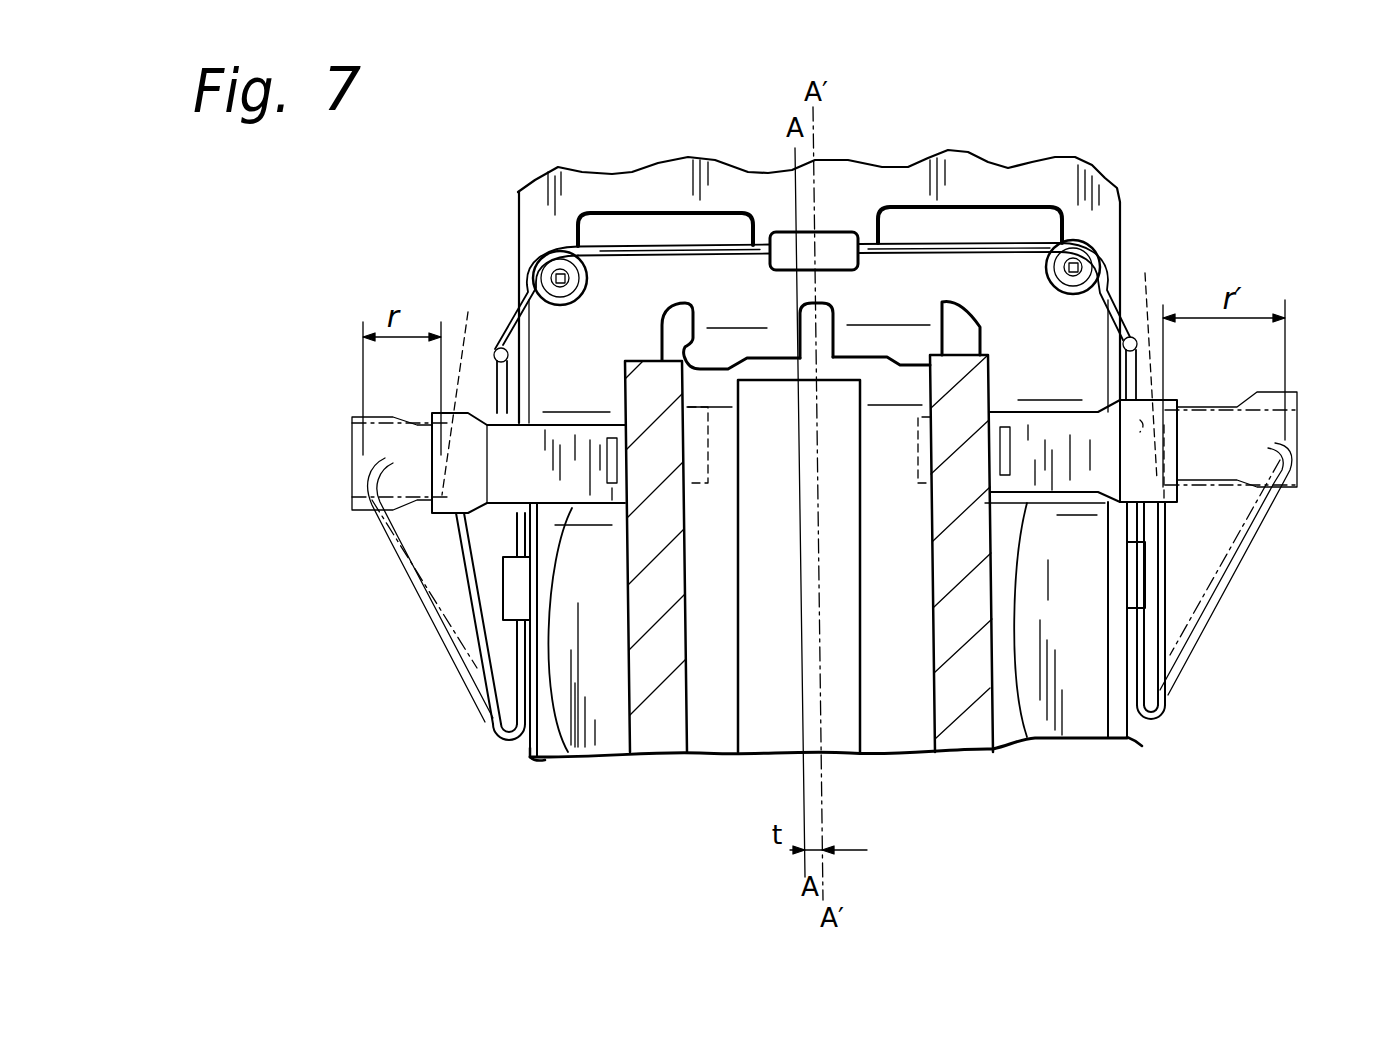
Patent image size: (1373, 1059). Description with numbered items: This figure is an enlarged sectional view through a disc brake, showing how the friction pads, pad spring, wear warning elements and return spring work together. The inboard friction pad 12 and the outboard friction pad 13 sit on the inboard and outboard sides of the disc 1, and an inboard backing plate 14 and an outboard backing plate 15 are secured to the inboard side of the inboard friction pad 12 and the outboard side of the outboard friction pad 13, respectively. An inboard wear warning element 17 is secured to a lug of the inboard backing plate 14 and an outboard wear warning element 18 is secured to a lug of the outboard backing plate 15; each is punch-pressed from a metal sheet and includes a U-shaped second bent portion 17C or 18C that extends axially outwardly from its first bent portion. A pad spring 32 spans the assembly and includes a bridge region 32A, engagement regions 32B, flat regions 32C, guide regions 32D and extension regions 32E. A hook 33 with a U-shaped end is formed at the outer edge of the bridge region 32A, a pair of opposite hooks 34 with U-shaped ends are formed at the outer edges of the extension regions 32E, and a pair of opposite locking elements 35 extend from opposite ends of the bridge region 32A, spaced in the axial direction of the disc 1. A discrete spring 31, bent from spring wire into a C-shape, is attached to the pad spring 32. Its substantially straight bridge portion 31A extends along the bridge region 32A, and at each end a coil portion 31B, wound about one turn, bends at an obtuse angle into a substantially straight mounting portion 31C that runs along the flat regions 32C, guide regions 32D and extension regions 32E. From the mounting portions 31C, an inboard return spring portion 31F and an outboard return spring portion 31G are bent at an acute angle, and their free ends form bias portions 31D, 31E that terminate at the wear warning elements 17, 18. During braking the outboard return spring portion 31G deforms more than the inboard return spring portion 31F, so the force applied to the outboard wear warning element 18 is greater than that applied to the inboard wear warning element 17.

The disc 1 is at (852, 753).
The inboard friction pad 12 is at (718, 723).
The outboard friction pad 13 is at (913, 720).
The inboard backing plate 14 is at (658, 722).
The outboard backing plate 15 is at (973, 720).
The inboard wear warning element 17 is at (557, 440).
The second bent portion 17C is at (430, 452).
The outboard wear warning element 18 is at (1057, 427).
The second bent portion 18C is at (1287, 462).
The spring 31 is at (1068, 239).
The bridge portion 31A is at (665, 245).
The coil portion 31B is at (545, 335).
The mounting portion 31C is at (502, 533).
The bias portion 31D is at (463, 386).
The bias portion 31E is at (1152, 371).
The inboard return spring portion 31F is at (475, 660).
The outboard return spring portion 31G is at (1175, 667).
The pad spring 32 is at (1097, 740).
The bridge region 32A is at (912, 277).
The engagement region 32B is at (740, 343).
The flat region 32C is at (547, 337).
The guide region 32D is at (570, 740).
The extension region 32E is at (540, 760).
The hook 33 is at (833, 247).
The hook 34 is at (508, 593).
The locking element 35 is at (548, 275).